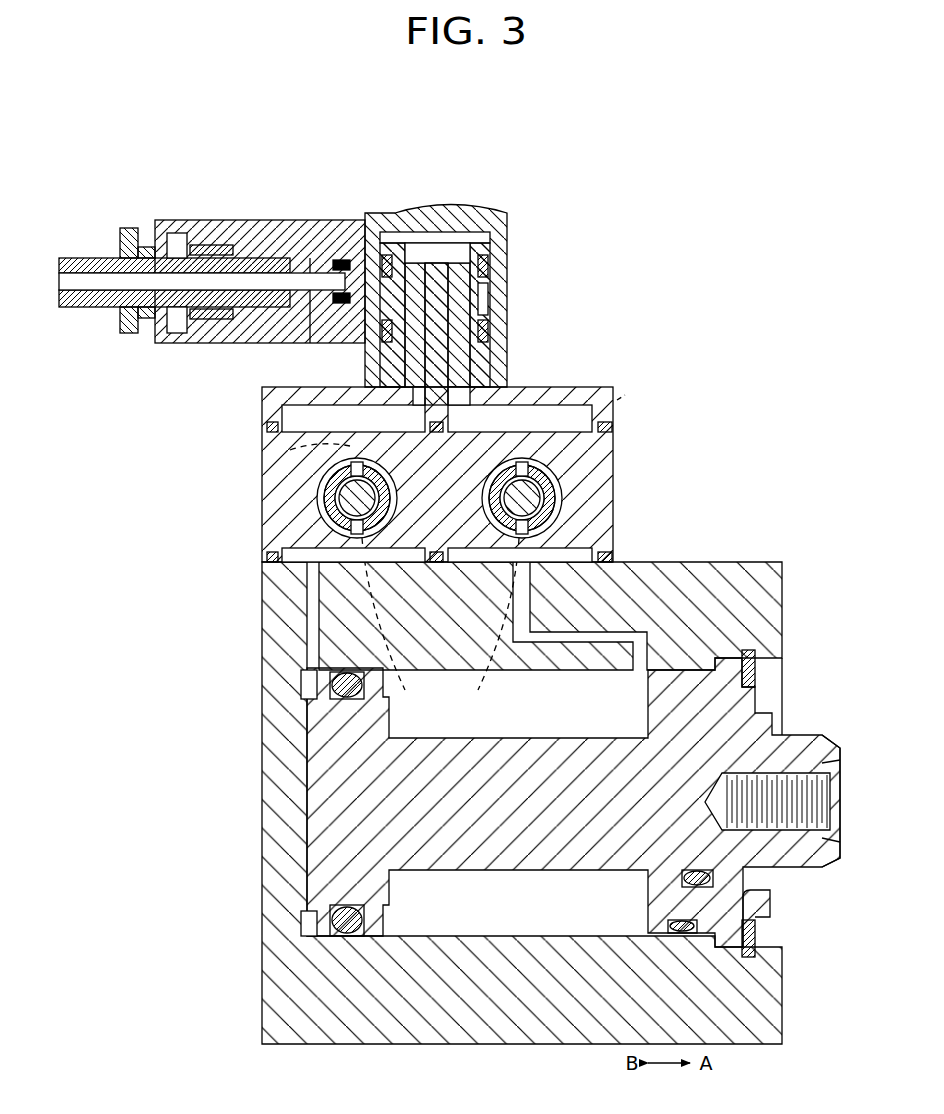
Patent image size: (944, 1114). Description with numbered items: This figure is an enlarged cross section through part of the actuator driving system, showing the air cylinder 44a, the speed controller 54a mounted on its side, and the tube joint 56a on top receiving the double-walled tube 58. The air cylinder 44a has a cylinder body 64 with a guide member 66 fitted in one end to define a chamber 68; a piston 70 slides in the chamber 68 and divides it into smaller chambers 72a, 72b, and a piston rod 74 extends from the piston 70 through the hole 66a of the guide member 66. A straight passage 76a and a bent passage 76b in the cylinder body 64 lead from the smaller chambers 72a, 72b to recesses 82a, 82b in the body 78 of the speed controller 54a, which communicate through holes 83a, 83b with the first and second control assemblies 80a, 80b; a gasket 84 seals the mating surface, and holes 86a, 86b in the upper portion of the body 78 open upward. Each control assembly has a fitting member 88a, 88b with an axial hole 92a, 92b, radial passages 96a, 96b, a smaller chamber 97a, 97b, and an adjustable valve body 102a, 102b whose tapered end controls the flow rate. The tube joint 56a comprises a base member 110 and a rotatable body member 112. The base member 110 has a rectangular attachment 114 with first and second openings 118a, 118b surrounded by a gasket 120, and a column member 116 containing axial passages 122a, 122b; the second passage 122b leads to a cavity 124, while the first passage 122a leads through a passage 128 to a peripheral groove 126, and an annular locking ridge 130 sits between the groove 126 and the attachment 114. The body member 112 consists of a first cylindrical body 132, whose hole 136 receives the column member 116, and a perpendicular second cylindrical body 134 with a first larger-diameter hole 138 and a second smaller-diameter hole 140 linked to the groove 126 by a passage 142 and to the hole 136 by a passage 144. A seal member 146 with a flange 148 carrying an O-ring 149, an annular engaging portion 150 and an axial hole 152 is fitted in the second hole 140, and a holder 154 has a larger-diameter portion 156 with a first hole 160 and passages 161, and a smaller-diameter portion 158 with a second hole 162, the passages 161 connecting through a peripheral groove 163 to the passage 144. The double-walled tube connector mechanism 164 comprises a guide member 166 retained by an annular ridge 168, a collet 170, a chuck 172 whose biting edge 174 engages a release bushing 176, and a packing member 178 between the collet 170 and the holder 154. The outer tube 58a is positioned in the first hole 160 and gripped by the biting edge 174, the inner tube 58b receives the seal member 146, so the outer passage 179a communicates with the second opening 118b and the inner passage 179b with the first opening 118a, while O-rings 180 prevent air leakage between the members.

The air cylinder 44a is at (257, 773).
The speed controller 54a is at (232, 526).
The tube joint 56a is at (525, 240).
The double-walled tube 58 is at (110, 308).
The outer tube 58a is at (85, 292).
The inner tube 58b is at (88, 276).
The cylinder body 64 is at (775, 592).
The guide member 66 is at (730, 696).
The hole 66a is at (782, 735).
The chamber 68 is at (545, 723).
The piston 70 is at (302, 880).
The smaller chamber 72a is at (305, 926).
The smaller chamber 72b is at (535, 922).
The piston rod 74 is at (498, 850).
The straight passage 76a is at (312, 650).
The bent passage 76b is at (640, 638).
The body 78 is at (590, 490).
The first control assembly 80a is at (335, 540).
The second control assembly 80b is at (577, 498).
The recess 82a is at (302, 600).
The recess 82b is at (600, 549).
The hole 83a is at (395, 705).
The hole 83b is at (454, 705).
The gasket 84 is at (640, 560).
The hole 86a is at (290, 452).
The hole 86b is at (632, 393).
The fitting member 88a is at (332, 490).
The fitting member 88b is at (600, 497).
The hole 92a is at (322, 530).
The hole 92b is at (590, 478).
The radial passages 96a is at (300, 472).
The radial passages 96b is at (580, 466).
The smaller chamber 97a is at (302, 580).
The smaller chamber 97b is at (600, 533).
The valve body 102a is at (322, 510).
The valve body 102b is at (590, 508).
The base member 110 is at (610, 390).
The body member 112 is at (518, 212).
The rectangular attachment 114 is at (614, 412).
The column member 116 is at (490, 357).
The first opening 118a is at (289, 430).
The second opening 118b is at (520, 430).
The gasket 120 is at (614, 425).
The first axial passage 122a is at (418, 408).
The second axial passage 122b is at (455, 408).
The cavity 124 is at (442, 272).
The peripheral groove 126 is at (484, 298).
The passage 128 is at (450, 255).
The annular locking ridge 130 is at (498, 347).
The first cylindrical body 132 is at (500, 242).
The second cylindrical body 134 is at (300, 337).
The hole 136 is at (472, 378).
The first larger-diameter hole 138 is at (172, 322).
The second smaller-diameter hole 140 is at (373, 248).
The passage 142 is at (350, 345).
The passage 144 is at (350, 270).
The seal member 146 is at (312, 345).
The flange 148 is at (332, 262).
The O-ring 149 is at (398, 293).
The annular engaging portion 150 is at (270, 222).
The axial hole 152 is at (237, 323).
The holder 154 is at (272, 250).
The larger-diameter portion 156 is at (262, 326).
The smaller-diameter portion 158 is at (323, 262).
The first hole 160 is at (290, 270).
The passages 161 is at (300, 262).
The second hole 162 is at (318, 333).
The peripheral groove 163 is at (312, 270).
The double-walled tube connector mechanism 164 is at (130, 333).
The guide member 166 is at (158, 248).
The annular ridge 168 is at (176, 222).
The collet 170 is at (196, 248).
The chuck 172 is at (200, 334).
The biting edge 174 is at (226, 250).
The release bushing 176 is at (127, 228).
The packing member 178 is at (237, 248).
The outer passage 179a is at (88, 308).
The inner passage 179b is at (70, 258).
The O-rings 180 is at (486, 264).